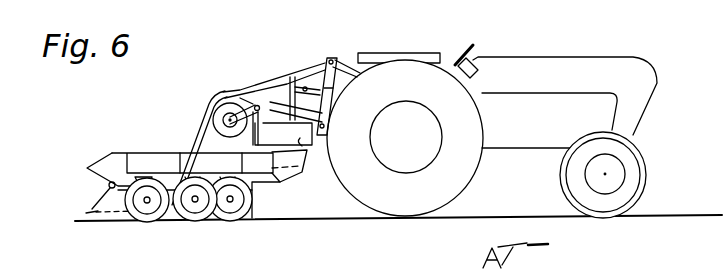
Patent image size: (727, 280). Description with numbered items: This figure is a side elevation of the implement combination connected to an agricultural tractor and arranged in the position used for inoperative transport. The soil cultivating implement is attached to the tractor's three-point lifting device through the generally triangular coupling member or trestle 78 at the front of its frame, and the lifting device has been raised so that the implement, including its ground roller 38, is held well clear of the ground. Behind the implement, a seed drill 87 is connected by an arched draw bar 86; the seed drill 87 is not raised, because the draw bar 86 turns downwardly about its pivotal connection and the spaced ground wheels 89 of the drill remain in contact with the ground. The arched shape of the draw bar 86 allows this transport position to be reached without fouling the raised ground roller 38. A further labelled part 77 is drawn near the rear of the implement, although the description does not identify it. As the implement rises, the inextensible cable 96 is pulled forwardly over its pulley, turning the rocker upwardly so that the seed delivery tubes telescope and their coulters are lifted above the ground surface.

The ground roller 38 is at (214, 112).
The support box 77 is at (296, 170).
The coupling member or trestle 78 is at (333, 57).
The arched draw bar 86 is at (207, 119).
The seed drill 87 is at (119, 152).
The ground wheels 89 is at (212, 222).
The cable 96 is at (284, 78).